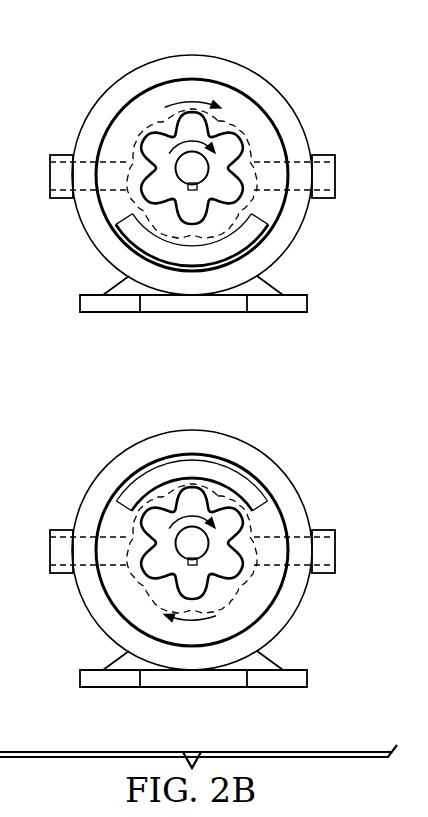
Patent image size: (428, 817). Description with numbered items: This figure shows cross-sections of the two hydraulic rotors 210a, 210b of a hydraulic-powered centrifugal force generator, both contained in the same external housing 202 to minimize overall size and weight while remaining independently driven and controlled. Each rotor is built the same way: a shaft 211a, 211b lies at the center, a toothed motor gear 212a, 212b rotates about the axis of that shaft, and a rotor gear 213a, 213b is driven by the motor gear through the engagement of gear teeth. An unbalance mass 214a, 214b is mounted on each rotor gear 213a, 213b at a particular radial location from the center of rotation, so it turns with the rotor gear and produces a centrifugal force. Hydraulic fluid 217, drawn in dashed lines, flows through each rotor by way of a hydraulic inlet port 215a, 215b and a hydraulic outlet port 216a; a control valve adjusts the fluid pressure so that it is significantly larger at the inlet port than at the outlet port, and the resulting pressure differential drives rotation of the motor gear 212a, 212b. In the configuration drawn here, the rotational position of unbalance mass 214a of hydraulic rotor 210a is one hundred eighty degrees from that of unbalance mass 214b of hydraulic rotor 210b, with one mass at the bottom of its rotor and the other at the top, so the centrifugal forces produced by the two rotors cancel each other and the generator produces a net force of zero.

The external housing 202 is at (253, 65).
The hydraulic rotor 210a is at (95, 68).
The hydraulic rotor 210b is at (95, 443).
The shaft 211a is at (192, 167).
The shaft 211b is at (192, 542).
The motor gear 212a is at (187, 199).
The motor gear 212b is at (210, 593).
The rotor gear 213a is at (267, 205).
The rotor gear 213b is at (267, 580).
The unbalance mass 214a is at (125, 228).
The unbalance mass 214b is at (168, 473).
The hydraulic inlet port 215a is at (336, 176).
The hydraulic inlet port 215b is at (336, 551).
The hydraulic outlet port 216a is at (63, 199).
The hydraulic fluid 217 is at (125, 160).